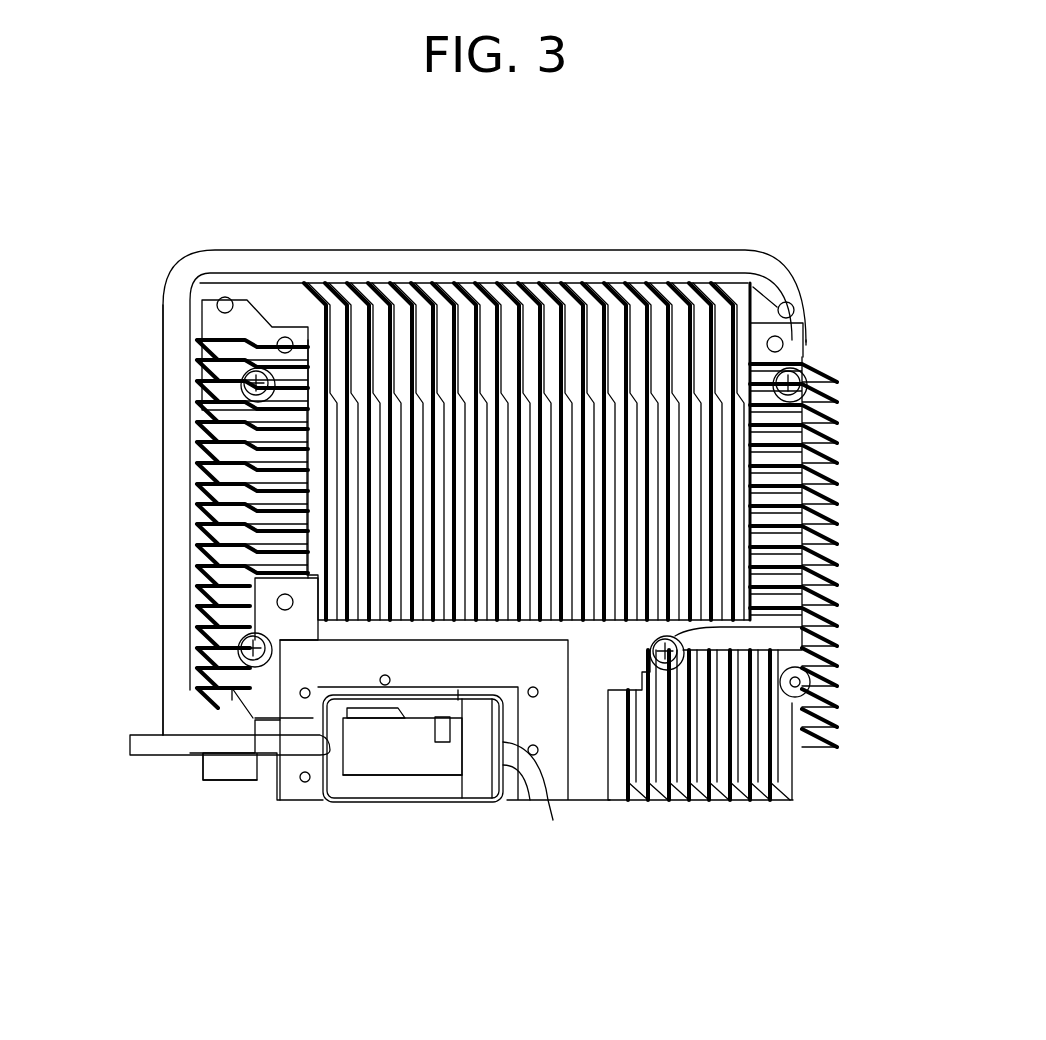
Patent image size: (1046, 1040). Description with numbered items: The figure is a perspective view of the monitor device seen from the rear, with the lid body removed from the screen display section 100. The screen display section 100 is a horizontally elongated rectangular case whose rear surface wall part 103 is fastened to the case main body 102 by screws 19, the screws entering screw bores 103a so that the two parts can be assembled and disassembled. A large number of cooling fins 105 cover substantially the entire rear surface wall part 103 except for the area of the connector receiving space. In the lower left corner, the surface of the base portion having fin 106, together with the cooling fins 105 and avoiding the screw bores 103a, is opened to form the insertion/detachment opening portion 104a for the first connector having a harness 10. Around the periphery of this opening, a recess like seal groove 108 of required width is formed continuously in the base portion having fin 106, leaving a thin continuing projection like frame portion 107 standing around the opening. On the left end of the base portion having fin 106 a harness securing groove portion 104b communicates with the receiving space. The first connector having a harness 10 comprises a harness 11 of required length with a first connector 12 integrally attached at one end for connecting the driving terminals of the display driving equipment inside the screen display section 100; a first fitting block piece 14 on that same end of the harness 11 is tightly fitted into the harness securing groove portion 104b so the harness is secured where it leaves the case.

The screen display section 100 is at (825, 214).
The case main body 102 is at (601, 254).
The rear surface wall part 103 is at (205, 760).
The screw bores 103a is at (285, 337).
The insertion/detachment opening portion 104a is at (484, 790).
The harness securing groove portion 104b is at (325, 740).
The cooling fins 105 is at (507, 370).
The base portion having fin 106 is at (214, 786).
The frame portion 107 is at (458, 692).
The seal groove 108 is at (542, 792).
The first connector having a harness 10 is at (392, 790).
The harness 11 is at (283, 772).
The first connector 12 is at (432, 760).
The first fitting block piece 14 is at (328, 752).
The screws 19 is at (222, 299).